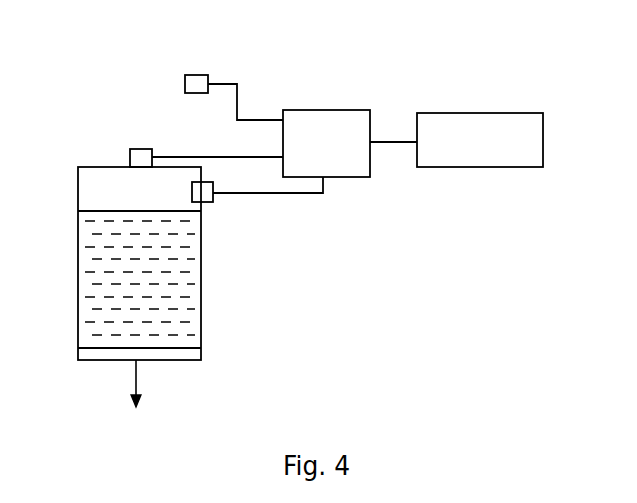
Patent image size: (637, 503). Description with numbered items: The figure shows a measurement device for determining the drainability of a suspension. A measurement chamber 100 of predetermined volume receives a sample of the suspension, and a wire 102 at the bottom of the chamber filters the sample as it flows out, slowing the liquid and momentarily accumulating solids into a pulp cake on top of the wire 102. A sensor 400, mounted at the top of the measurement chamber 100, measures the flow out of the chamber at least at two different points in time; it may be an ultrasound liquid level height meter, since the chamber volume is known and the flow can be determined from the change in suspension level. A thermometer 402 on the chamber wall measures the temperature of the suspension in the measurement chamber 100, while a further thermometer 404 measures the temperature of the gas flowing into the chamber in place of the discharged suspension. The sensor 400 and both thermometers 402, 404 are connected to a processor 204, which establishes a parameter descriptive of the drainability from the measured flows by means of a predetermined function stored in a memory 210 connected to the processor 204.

The measurement chamber 100 is at (78, 257).
The wire 102 is at (79, 356).
The sensor 400 is at (138, 148).
The thermometer 402 is at (200, 202).
The thermometer 404 is at (195, 75).
The processor 204 is at (313, 110).
The memory 210 is at (465, 113).